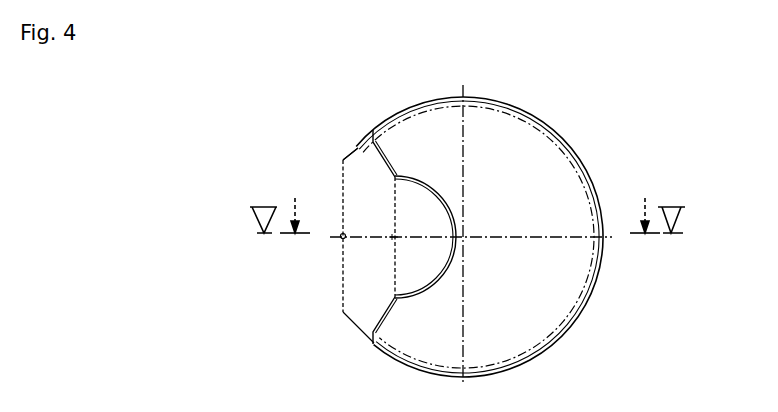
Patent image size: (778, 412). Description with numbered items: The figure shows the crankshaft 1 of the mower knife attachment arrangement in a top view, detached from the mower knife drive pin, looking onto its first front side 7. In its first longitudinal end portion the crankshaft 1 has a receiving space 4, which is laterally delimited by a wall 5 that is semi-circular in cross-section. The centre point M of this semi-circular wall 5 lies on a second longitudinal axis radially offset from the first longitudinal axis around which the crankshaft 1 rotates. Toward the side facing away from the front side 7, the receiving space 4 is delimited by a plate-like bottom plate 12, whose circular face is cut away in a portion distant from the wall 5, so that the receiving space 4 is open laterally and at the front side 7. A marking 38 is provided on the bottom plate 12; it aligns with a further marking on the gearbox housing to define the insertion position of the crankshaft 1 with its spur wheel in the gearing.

The crankshaft 1 is at (575, 147).
The receiving space 4 is at (405, 212).
The wall 5 is at (418, 178).
The first front side 7 is at (535, 322).
The bottom plate 12 is at (358, 155).
The marking 38 is at (341, 237).
The centre point M is at (393, 239).